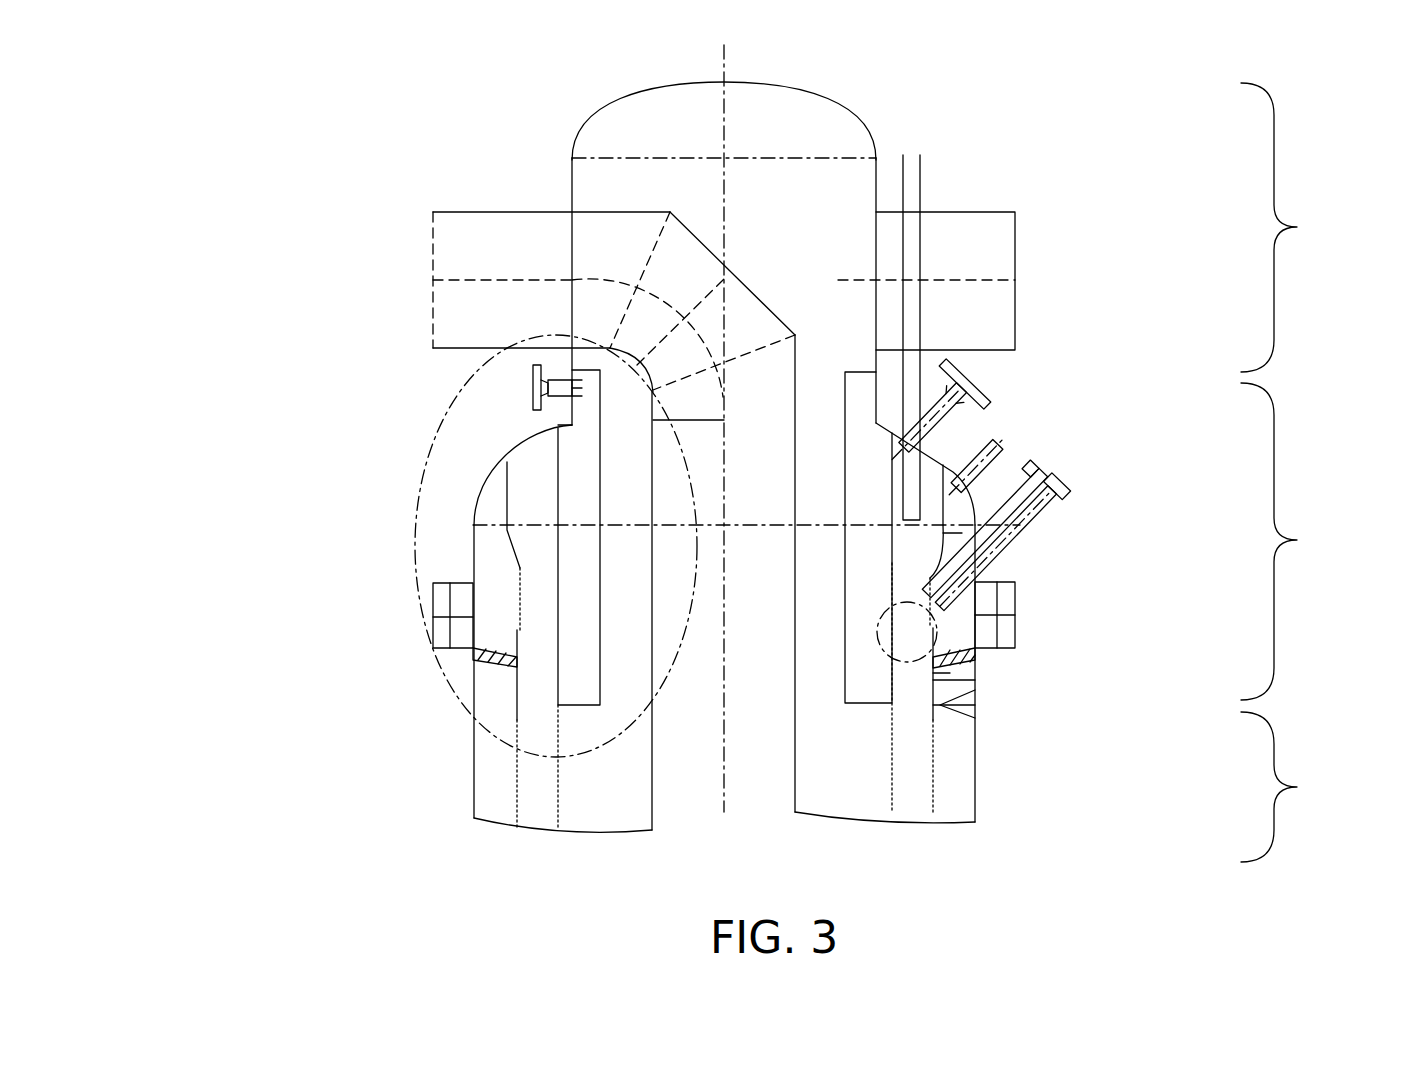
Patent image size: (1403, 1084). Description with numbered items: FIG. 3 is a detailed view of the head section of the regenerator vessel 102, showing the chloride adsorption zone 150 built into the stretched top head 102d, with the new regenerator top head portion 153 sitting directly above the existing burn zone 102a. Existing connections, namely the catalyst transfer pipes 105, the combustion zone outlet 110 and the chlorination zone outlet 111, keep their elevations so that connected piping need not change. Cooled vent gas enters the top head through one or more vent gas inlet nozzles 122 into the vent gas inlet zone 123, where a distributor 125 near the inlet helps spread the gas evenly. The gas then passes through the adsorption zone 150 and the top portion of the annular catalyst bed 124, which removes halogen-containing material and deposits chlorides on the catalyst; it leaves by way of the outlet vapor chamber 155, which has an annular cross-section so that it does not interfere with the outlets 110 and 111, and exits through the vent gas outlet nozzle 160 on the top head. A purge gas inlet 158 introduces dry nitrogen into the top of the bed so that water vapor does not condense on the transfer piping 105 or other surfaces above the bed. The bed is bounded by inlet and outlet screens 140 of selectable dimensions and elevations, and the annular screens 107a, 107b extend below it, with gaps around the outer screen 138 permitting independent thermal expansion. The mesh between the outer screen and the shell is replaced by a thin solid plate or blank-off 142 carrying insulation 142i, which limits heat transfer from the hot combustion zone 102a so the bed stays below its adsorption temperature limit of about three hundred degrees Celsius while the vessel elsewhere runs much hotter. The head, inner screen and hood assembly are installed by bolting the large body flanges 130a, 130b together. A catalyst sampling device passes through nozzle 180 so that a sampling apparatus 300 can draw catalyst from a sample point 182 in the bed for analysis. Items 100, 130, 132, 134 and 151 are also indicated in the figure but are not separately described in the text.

The valve assembly 100 is at (206, 232).
The regenerator vessel 102 is at (478, 800).
The burn zone 102a is at (1309, 787).
The top head 102d is at (1310, 227).
The catalyst transfer pipes 105 is at (911, 160).
The annular screen 107a is at (933, 800).
The annular screen 107b is at (892, 755).
The combustion zone outlet 110 is at (995, 212).
The chlorination zone outlet 111 is at (440, 212).
The vent gas inlet nozzle 122 is at (960, 502).
The vent gas inlet zone 123 is at (1037, 467).
The annular catalyst bed 124 is at (527, 545).
The distributor 125 is at (957, 537).
The insert 130 is at (857, 393).
The large body flange 130a is at (433, 598).
The large body flange 130b is at (433, 637).
The plug 132 is at (1000, 590).
The channel wall 134 is at (933, 705).
The outer screen 138 is at (517, 618).
The outlet screens 140 is at (600, 607).
The blank-off 142 is at (515, 663).
The insulation 142i is at (975, 692).
The chloride adsorption zone 150 is at (1301, 541).
The shoulder 151 is at (468, 713).
The regenerator top head portion 153 is at (438, 441).
The outlet vapor chamber 155 is at (870, 583).
The purge gas inlet 158 is at (985, 386).
The vent gas outlet nozzle 160 is at (527, 390).
The nozzle 180 is at (1067, 493).
The seal 182 is at (975, 655).
The flow direction 300 is at (1107, 498).